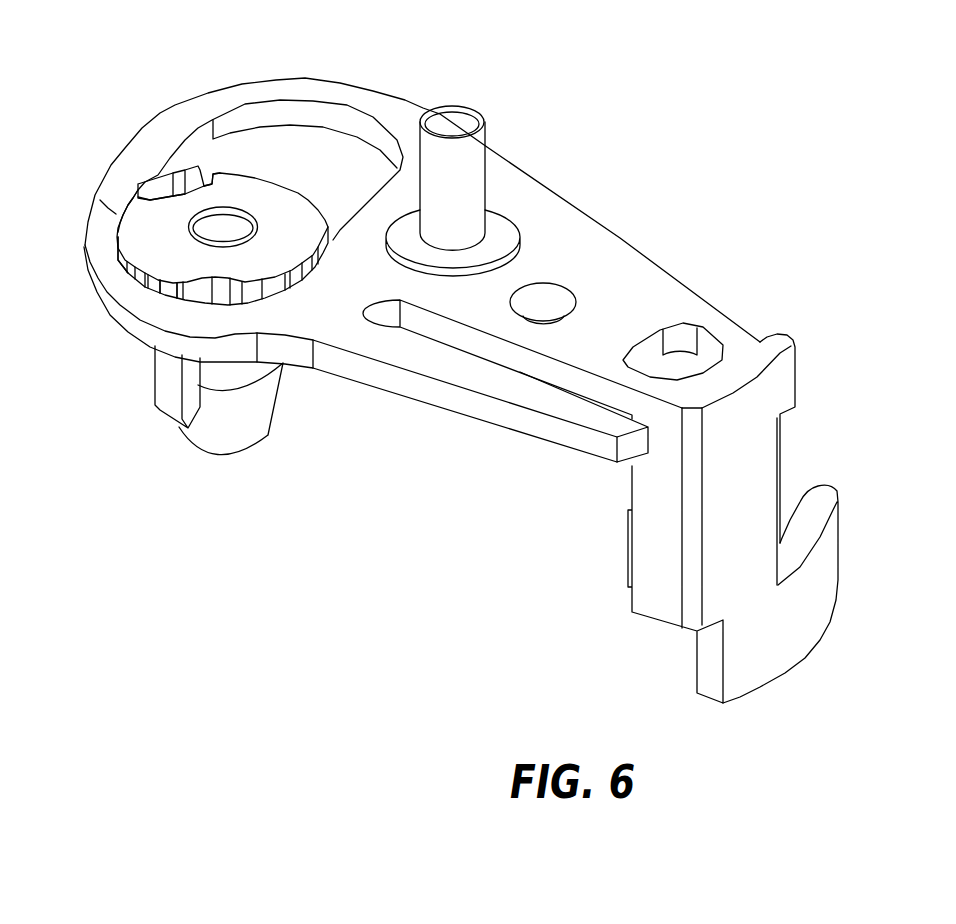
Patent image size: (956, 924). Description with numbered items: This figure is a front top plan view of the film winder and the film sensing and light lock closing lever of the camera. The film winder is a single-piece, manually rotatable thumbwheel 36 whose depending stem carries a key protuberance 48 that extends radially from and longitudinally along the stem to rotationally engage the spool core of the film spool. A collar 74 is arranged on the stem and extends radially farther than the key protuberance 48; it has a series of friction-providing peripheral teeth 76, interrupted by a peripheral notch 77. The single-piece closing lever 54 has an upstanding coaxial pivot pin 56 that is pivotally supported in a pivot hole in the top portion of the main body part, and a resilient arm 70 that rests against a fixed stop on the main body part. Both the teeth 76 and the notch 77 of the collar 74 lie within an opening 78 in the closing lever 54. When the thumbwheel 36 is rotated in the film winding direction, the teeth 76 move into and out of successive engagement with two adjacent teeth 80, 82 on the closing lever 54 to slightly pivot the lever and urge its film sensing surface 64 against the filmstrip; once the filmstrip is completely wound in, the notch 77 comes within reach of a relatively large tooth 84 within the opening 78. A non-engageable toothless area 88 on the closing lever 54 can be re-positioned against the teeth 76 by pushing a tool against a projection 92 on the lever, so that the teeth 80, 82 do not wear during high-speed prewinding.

The thumbwheel 36 is at (243, 418).
The key protuberance 48 is at (172, 395).
The closing lever 54 is at (621, 233).
The pivot pin 56 is at (457, 118).
The film sensing surface 64 is at (822, 483).
The resilient arm 70 is at (427, 388).
The collar 74 is at (253, 165).
The teeth 76 is at (130, 260).
The peripheral notch 77 is at (212, 178).
The opening 78 is at (312, 117).
The tooth 80 is at (135, 192).
The tooth 82 is at (118, 218).
The large tooth 84 is at (177, 163).
The toothless area 88 is at (175, 290).
The projection 92 is at (782, 333).